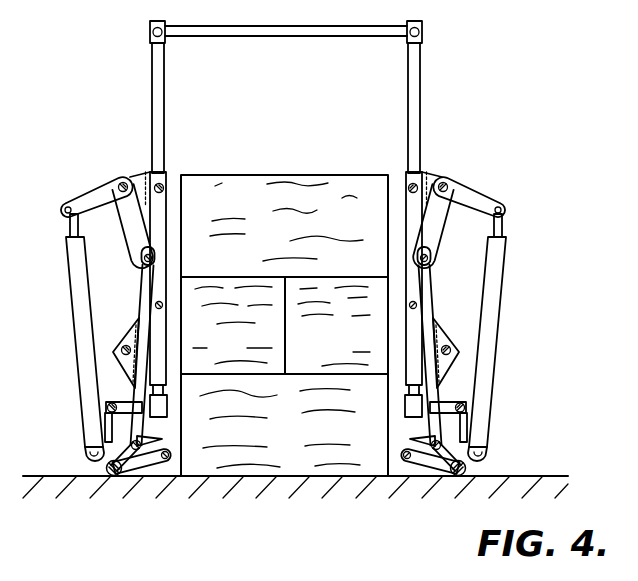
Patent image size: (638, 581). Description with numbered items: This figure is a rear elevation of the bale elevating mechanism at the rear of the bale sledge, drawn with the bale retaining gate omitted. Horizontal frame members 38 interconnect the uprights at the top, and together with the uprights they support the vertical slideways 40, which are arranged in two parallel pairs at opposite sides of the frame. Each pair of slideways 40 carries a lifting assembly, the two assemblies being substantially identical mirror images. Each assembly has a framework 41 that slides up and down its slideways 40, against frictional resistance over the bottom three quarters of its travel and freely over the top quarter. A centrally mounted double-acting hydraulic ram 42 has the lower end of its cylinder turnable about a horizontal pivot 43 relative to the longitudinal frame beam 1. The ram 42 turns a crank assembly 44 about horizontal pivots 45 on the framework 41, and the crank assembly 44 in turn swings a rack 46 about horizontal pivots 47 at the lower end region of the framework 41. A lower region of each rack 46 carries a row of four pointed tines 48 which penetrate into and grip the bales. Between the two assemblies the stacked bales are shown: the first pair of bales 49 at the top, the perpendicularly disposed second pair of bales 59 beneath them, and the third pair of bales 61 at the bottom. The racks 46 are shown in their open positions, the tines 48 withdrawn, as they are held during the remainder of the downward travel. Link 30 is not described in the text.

The longitudinal beam 1 is at (453, 478).
The ground link 30 is at (424, 466).
The horizontal frame member 38 is at (272, 37).
The vertical slideway 40 is at (152, 105).
The framework 41 is at (408, 207).
The hydraulic double-acting piston and cylinder assembly or ram 42 is at (505, 228).
The horizontal pivot 43 is at (488, 455).
The crank assembly 44 is at (430, 222).
The horizontal pivot 45 is at (446, 182).
The rack 46 is at (425, 306).
The horizontal pivot 47 is at (438, 346).
The pointed tine 48 is at (410, 439).
The first pair of bales 49 is at (261, 211).
The second pair of bales 59 is at (243, 358).
The third pair of bales 61 is at (272, 446).